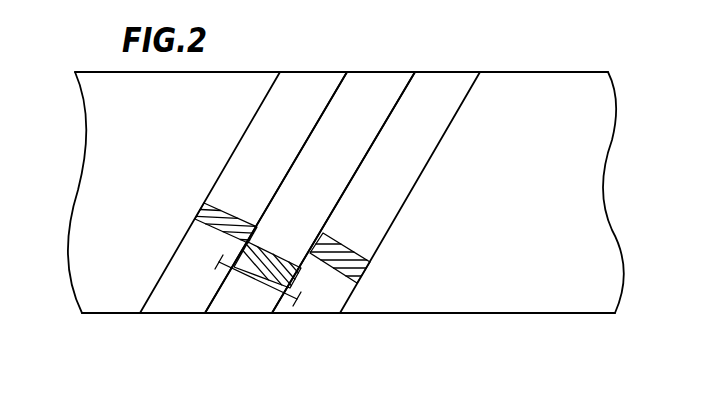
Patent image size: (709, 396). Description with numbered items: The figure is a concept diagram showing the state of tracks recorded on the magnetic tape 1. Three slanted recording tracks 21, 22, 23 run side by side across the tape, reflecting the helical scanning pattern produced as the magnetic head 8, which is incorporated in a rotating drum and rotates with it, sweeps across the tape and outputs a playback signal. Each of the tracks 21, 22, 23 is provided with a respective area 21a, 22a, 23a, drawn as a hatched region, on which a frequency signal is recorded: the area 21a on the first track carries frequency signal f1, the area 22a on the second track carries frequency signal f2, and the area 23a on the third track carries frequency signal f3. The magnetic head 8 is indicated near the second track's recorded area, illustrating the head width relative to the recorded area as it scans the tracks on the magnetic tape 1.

The magnetic tape 1 is at (527, 75).
The track 21 is at (300, 93).
The track 22 is at (374, 93).
The track 23 is at (437, 95).
The area 21a is at (203, 203).
The area 22a is at (302, 268).
The area 23a is at (384, 258).
The magnetic head 8 is at (266, 290).